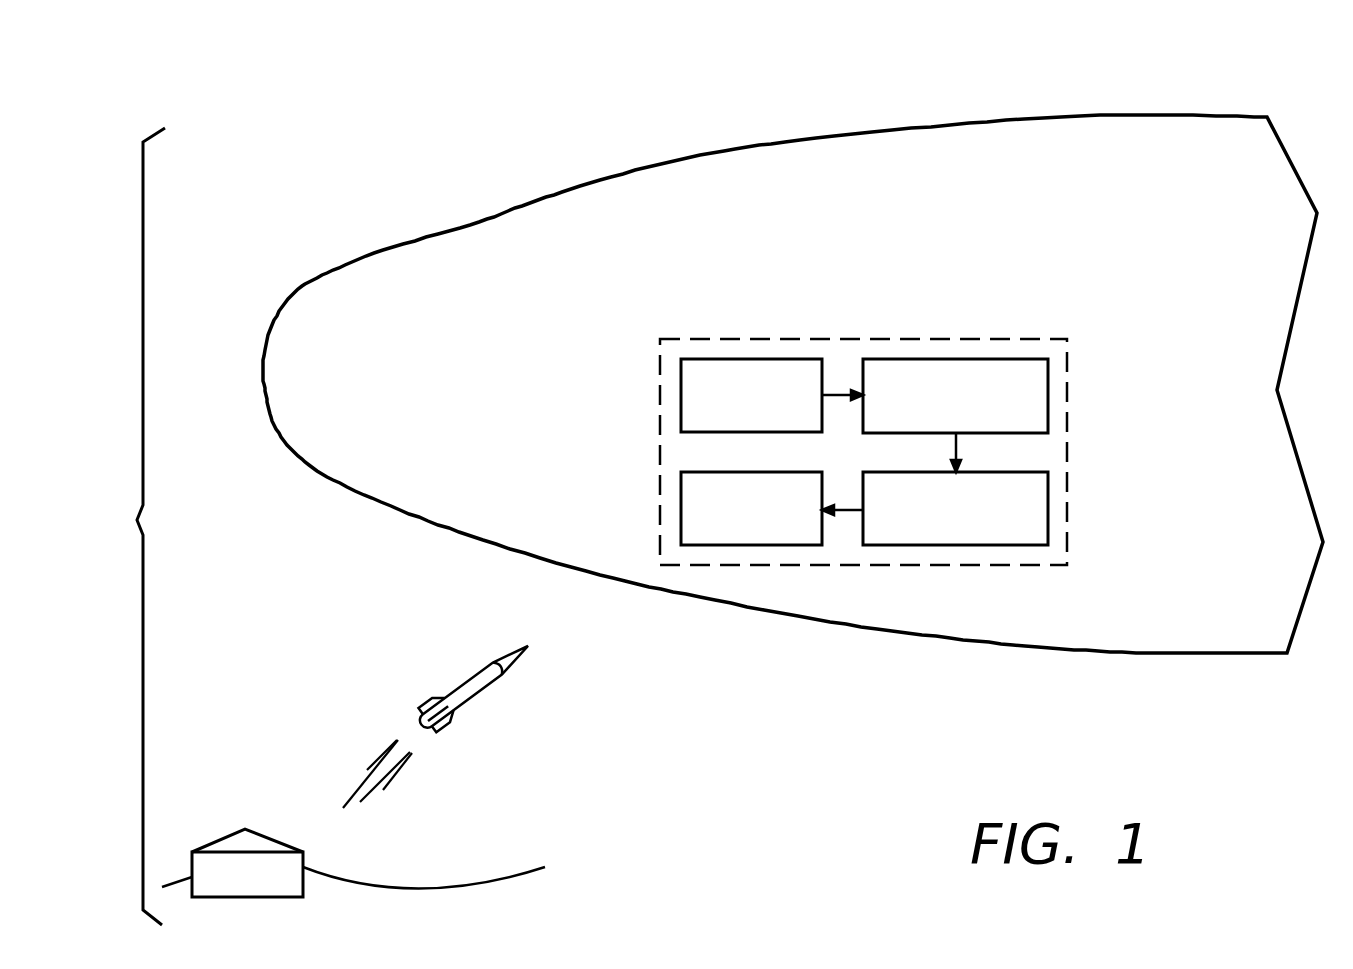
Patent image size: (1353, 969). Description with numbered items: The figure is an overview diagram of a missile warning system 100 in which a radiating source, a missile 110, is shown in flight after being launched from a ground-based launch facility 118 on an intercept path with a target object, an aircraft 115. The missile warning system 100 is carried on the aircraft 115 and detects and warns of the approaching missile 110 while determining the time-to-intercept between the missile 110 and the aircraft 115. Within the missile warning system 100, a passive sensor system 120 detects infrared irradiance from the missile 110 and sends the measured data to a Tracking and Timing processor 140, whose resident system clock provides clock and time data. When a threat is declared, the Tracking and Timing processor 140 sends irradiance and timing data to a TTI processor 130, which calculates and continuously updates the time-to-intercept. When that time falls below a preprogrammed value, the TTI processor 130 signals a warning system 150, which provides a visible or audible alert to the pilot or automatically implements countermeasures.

The missile warning system 100 is at (1030, 330).
The missile 110 is at (477, 697).
The aircraft 115 is at (466, 222).
The ground-based launch facility 118 is at (227, 868).
The passive sensor system 120 is at (765, 360).
The TTI processor 130 is at (723, 547).
The Tracking and Timing processor 140 is at (928, 362).
The warning system 150 is at (975, 547).